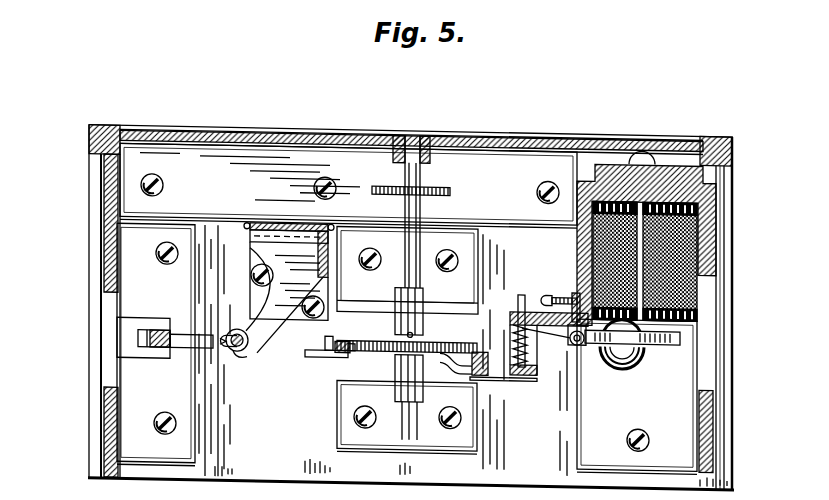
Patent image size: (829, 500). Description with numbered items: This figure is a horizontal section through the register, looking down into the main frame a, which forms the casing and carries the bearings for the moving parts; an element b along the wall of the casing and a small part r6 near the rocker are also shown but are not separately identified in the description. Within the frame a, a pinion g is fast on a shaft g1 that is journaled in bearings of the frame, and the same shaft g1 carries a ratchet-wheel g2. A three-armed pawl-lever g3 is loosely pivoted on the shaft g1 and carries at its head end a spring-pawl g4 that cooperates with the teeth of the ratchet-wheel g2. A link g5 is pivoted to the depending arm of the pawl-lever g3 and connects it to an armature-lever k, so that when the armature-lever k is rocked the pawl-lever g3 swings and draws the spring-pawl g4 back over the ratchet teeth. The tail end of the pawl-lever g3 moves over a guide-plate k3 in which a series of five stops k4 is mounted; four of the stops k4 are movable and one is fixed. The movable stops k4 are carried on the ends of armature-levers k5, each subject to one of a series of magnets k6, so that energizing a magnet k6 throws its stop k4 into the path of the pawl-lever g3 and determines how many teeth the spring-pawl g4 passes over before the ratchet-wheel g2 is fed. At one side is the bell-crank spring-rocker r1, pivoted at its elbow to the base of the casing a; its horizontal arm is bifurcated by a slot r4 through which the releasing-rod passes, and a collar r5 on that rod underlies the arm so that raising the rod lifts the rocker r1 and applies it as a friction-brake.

The main frame a is at (103, 238).
The top plate b is at (271, 126).
The pinion g is at (450, 181).
The shaft g1 is at (420, 237).
The ratchet-wheel g2 is at (345, 378).
The three-armed pawl-lever g3 is at (370, 341).
The spring-pawl g4 is at (304, 338).
The link g5 is at (465, 351).
The armature-lever k is at (490, 366).
The guide-plate k3 is at (190, 334).
The stops k4 is at (125, 338).
The armature-levers k5 is at (618, 357).
The magnets k6 is at (695, 275).
The bell-crank spring-rocker r1 is at (290, 247).
The slot r4 is at (225, 323).
The collar r5 is at (235, 348).
The lever hook r6 is at (240, 363).